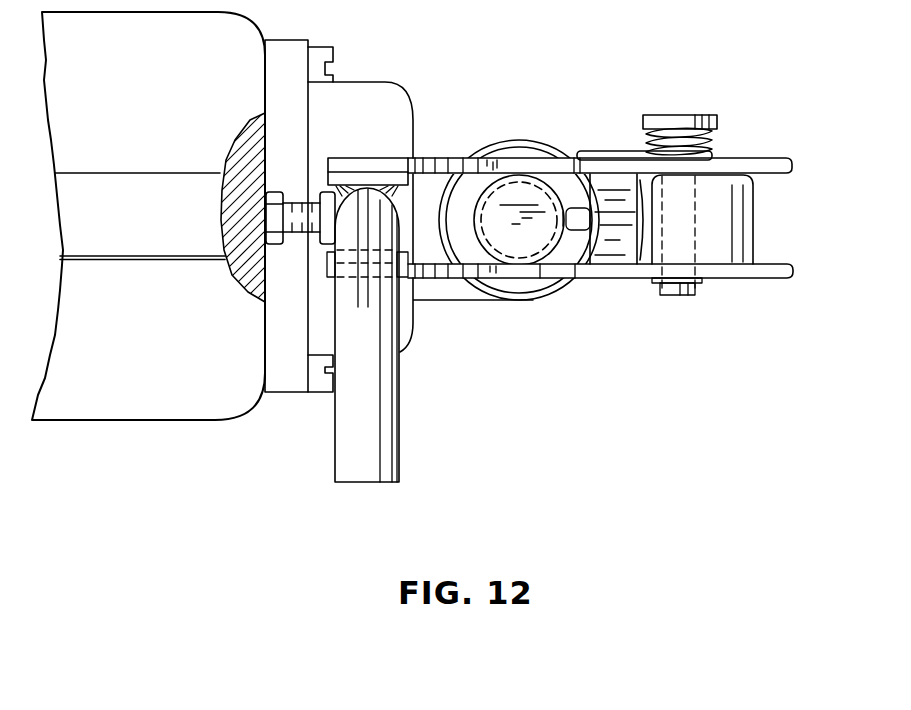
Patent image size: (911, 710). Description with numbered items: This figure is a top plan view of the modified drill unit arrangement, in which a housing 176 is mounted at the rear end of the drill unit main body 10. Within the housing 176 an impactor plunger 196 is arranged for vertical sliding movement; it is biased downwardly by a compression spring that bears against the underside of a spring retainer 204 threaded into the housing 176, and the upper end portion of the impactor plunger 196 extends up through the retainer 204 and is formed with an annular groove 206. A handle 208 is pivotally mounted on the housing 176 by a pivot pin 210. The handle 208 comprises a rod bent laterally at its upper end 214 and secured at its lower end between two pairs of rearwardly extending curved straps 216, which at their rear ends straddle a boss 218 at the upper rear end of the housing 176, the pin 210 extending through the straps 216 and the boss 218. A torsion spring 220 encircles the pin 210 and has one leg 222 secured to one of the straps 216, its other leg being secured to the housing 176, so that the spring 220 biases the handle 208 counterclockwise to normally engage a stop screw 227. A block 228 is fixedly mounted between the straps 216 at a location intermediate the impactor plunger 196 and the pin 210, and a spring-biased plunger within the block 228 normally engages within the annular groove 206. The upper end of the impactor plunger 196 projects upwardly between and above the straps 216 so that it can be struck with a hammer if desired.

The main body 10 is at (212, 428).
The housing 176 is at (406, 89).
The impactor plunger 196 is at (493, 258).
The spring retainer 204 is at (530, 280).
The annular groove 206 is at (536, 172).
The handle 208 is at (343, 230).
The pivot pin 210 is at (662, 122).
The laterally bent upper end of rod 214 is at (392, 470).
The curved straps 216 is at (462, 158).
The boss 218 is at (755, 215).
The torsion spring 220 is at (712, 145).
The spring leg 222 is at (612, 140).
The stop screw 227 is at (311, 191).
The block 228 is at (620, 260).